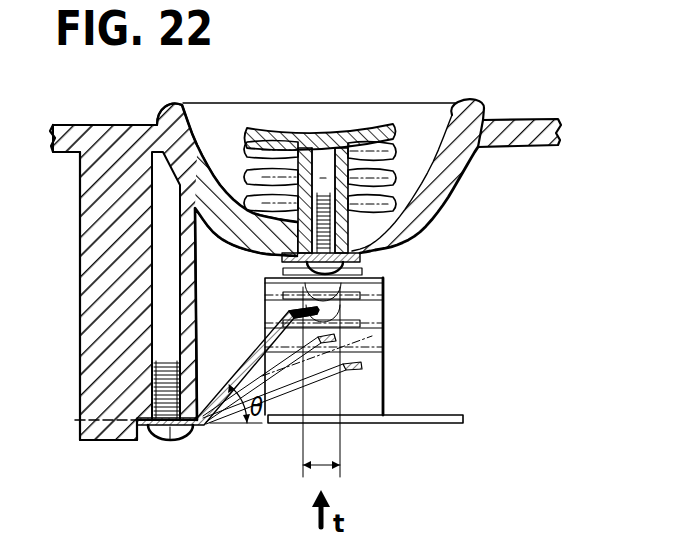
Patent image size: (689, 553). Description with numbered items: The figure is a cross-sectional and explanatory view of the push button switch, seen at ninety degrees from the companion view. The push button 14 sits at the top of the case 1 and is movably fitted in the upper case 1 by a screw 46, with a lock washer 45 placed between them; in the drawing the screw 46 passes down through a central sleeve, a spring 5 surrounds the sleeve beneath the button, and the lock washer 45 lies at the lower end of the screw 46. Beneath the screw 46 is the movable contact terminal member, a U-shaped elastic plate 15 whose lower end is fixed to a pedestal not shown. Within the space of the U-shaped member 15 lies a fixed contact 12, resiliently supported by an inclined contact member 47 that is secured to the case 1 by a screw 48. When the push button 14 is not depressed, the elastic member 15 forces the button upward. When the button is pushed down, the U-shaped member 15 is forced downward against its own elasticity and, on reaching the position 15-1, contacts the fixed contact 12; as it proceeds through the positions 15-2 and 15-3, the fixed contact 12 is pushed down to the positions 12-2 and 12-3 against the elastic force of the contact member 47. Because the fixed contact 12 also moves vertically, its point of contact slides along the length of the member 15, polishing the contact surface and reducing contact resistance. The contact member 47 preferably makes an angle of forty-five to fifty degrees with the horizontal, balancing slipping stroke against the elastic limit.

The case 1 is at (515, 118).
The screw 5 is at (383, 124).
The fixed contact 12 is at (298, 312).
The position of the fixed contact 12-2 is at (348, 350).
The position of the fixed contact 12-3 is at (333, 373).
The push button 14 is at (250, 134).
The U-shaped elastic plate 15 is at (383, 280).
The position of the movable terminal member 15-1 is at (372, 297).
The position of the movable terminal member 15-2 is at (372, 325).
The position of the movable terminal member 15-3 is at (372, 350).
The lock washer 45 is at (368, 256).
The screw 46 is at (282, 258).
The contact member 47 is at (251, 362).
The screw 48 is at (170, 441).